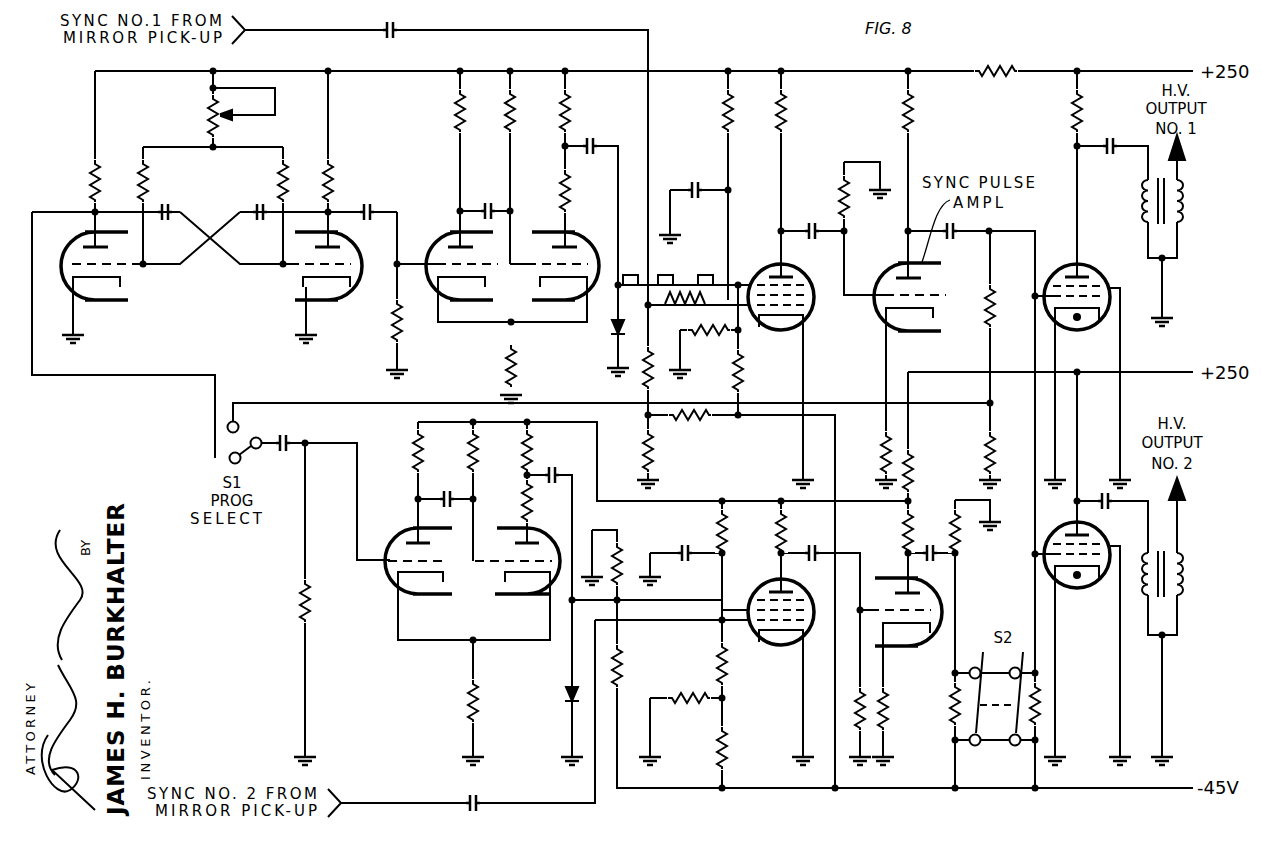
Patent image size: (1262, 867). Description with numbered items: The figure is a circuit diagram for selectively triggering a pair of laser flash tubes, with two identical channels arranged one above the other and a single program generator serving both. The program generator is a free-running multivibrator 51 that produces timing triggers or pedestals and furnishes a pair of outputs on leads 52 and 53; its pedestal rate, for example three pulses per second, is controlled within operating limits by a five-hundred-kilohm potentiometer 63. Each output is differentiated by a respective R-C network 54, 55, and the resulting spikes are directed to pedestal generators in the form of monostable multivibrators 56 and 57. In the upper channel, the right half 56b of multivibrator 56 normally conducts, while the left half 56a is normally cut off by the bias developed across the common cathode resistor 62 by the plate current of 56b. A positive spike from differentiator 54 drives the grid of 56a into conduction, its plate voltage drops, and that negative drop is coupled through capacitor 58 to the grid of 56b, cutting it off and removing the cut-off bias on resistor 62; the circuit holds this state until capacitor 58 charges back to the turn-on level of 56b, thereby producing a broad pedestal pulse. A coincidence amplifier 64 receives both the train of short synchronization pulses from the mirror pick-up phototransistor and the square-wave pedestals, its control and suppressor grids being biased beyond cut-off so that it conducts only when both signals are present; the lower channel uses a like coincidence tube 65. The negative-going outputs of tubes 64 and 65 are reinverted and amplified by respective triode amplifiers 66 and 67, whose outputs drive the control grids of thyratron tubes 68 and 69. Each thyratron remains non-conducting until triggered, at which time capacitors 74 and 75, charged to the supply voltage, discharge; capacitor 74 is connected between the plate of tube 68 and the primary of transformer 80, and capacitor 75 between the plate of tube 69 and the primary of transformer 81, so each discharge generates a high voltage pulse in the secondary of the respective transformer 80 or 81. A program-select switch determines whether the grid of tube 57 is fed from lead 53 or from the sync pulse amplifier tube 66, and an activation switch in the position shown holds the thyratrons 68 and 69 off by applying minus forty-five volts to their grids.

The free-running multivibrator 51 is at (211, 272).
The lead 52 is at (331, 211).
The lead 53 is at (47, 212).
The R-C network 54 is at (392, 216).
The R-C network 55 is at (298, 598).
The monostable multivibrator 56 is at (518, 286).
The left half of monostable multivibrator 56a is at (433, 248).
The right half of monostable multivibrator 56b is at (597, 250).
The monostable multivibrator 57 is at (385, 572).
The capacitor 58 is at (488, 204).
The common cathode resistor 62 is at (518, 366).
The potentiometer 63 is at (214, 118).
The coincidence amplifier 64 is at (770, 331).
The coincidence tube 65 is at (768, 652).
The triode amplifier 66 is at (875, 298).
The triode amplifier 67 is at (920, 643).
The thyratron tube 68 is at (1104, 327).
The thyratron tube 69 is at (1104, 587).
The capacitor 74 is at (1109, 152).
The capacitor 75 is at (1113, 506).
The high voltage transformer 80 is at (1178, 206).
The high voltage transformer 81 is at (1178, 572).